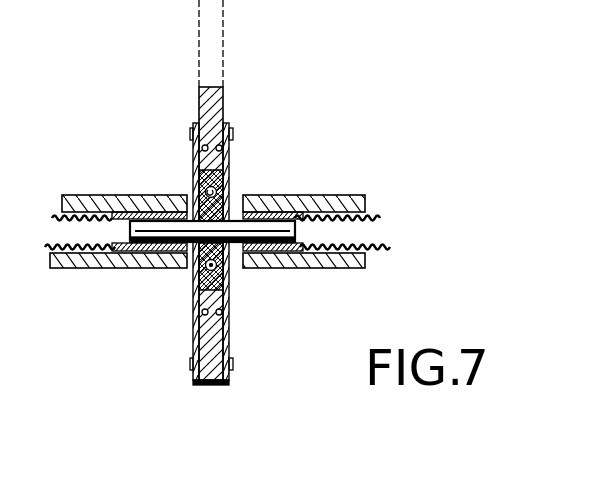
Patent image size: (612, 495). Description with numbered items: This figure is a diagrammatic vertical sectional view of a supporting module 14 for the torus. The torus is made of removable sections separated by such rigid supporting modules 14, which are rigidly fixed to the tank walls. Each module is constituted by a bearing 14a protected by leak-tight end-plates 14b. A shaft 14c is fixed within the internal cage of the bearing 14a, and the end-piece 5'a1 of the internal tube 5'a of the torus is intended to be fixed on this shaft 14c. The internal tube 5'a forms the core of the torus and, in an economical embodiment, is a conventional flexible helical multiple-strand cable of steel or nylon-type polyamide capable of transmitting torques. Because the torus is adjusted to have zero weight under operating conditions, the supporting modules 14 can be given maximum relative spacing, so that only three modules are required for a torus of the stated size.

The supporting module 14 is at (155, 95).
The bearing 14a is at (198, 190).
The leak-tight end-plates 14b is at (195, 297).
The shaft 14c is at (245, 228).
The end-piece of the internal tube 5'a1 is at (304, 170).
The internal tube 5'a is at (320, 194).